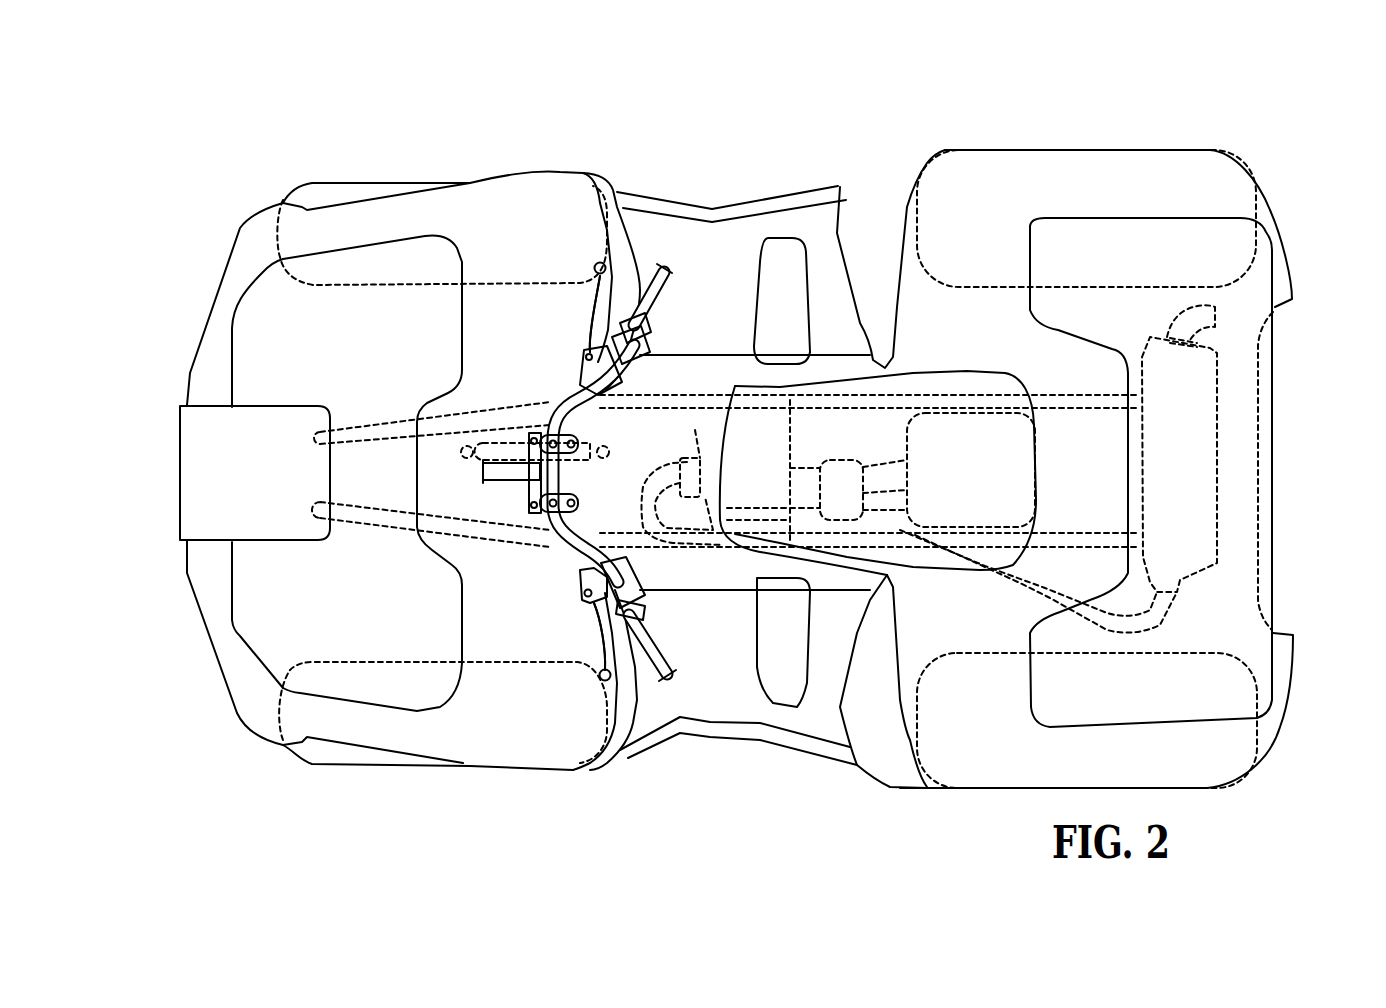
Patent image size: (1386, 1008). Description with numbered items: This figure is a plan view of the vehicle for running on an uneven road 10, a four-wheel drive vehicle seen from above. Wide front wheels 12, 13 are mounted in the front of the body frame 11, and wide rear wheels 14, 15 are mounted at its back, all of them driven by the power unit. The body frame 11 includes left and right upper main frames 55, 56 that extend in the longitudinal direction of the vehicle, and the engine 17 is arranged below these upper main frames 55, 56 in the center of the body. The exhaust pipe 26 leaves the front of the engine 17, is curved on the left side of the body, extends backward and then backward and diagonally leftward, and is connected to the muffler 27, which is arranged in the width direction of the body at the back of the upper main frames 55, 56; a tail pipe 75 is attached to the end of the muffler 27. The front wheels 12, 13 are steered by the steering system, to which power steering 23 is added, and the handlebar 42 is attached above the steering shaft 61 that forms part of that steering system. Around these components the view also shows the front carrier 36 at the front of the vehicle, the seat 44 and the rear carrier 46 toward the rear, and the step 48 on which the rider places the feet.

The vehicle for running on an uneven road 10 is at (300, 172).
The body frame 11 is at (350, 415).
The front wheel 12 is at (353, 765).
The front wheel 13 is at (373, 183).
The rear wheel 14 is at (913, 772).
The rear wheel 15 is at (905, 205).
The engine 17 is at (803, 428).
The power steering 23 is at (530, 433).
The exhaust pipe 26 is at (680, 448).
The muffler 27 is at (1218, 440).
The front carrier 36 is at (190, 358).
The handlebar 42 is at (647, 520).
The seat 44 is at (980, 370).
The rear carrier 46 is at (1105, 218).
The step 48 is at (751, 257).
The upper main frame 55 is at (461, 412).
The upper main frame 56 is at (507, 428).
The steering shaft 61 is at (518, 482).
The tail pipe 75 is at (1185, 317).